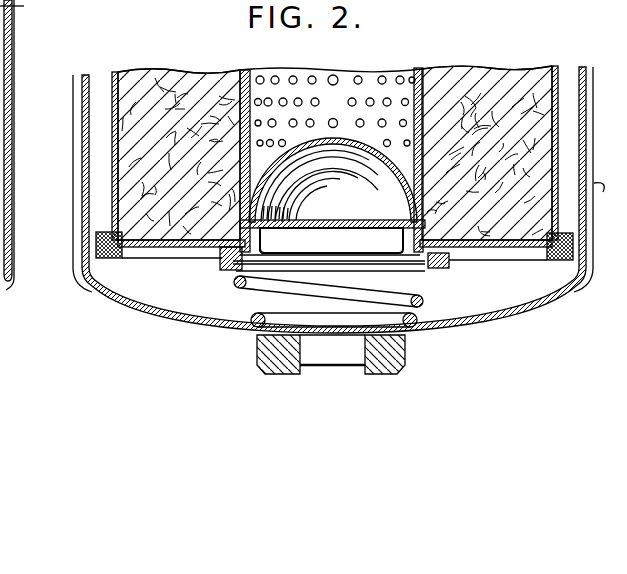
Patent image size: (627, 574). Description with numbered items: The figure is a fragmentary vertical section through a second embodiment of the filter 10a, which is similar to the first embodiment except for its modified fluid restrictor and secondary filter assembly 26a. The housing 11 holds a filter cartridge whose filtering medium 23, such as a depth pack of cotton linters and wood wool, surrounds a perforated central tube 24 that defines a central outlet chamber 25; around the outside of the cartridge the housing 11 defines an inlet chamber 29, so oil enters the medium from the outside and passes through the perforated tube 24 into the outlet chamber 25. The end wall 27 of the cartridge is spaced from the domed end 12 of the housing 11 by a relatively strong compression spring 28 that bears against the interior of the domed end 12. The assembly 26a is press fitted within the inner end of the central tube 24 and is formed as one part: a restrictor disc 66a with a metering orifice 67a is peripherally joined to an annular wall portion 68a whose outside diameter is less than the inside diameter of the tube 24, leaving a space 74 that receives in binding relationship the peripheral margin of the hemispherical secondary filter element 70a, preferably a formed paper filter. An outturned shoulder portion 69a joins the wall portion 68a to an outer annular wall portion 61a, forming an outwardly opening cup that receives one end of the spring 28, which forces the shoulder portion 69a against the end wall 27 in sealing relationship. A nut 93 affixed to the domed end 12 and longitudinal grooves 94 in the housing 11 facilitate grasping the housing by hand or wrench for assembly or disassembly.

The filter 10a is at (553, 186).
The housing 11 is at (590, 141).
The domed end 12 is at (528, 314).
The filtering medium 23 is at (470, 73).
The perforated central tube 24 is at (252, 75).
The central outlet chamber 25 is at (336, 114).
The fluid restrictor and secondary filter assembly 26a is at (449, 265).
The end wall 27 is at (162, 247).
The compression spring 28 is at (421, 302).
The inlet chamber 29 is at (570, 79).
The outer annular wall portion 61a is at (228, 264).
The restrictor disc 66a is at (343, 228).
The metering orifice 67a is at (337, 223).
The annular wall portion 68a is at (261, 242).
The outturned shoulder portion 69a is at (237, 280).
The hemispherical secondary filter element 70a is at (356, 145).
The space 74 is at (283, 212).
The nut 93 is at (408, 351).
The longitudinal grooves 94 is at (12, 67).